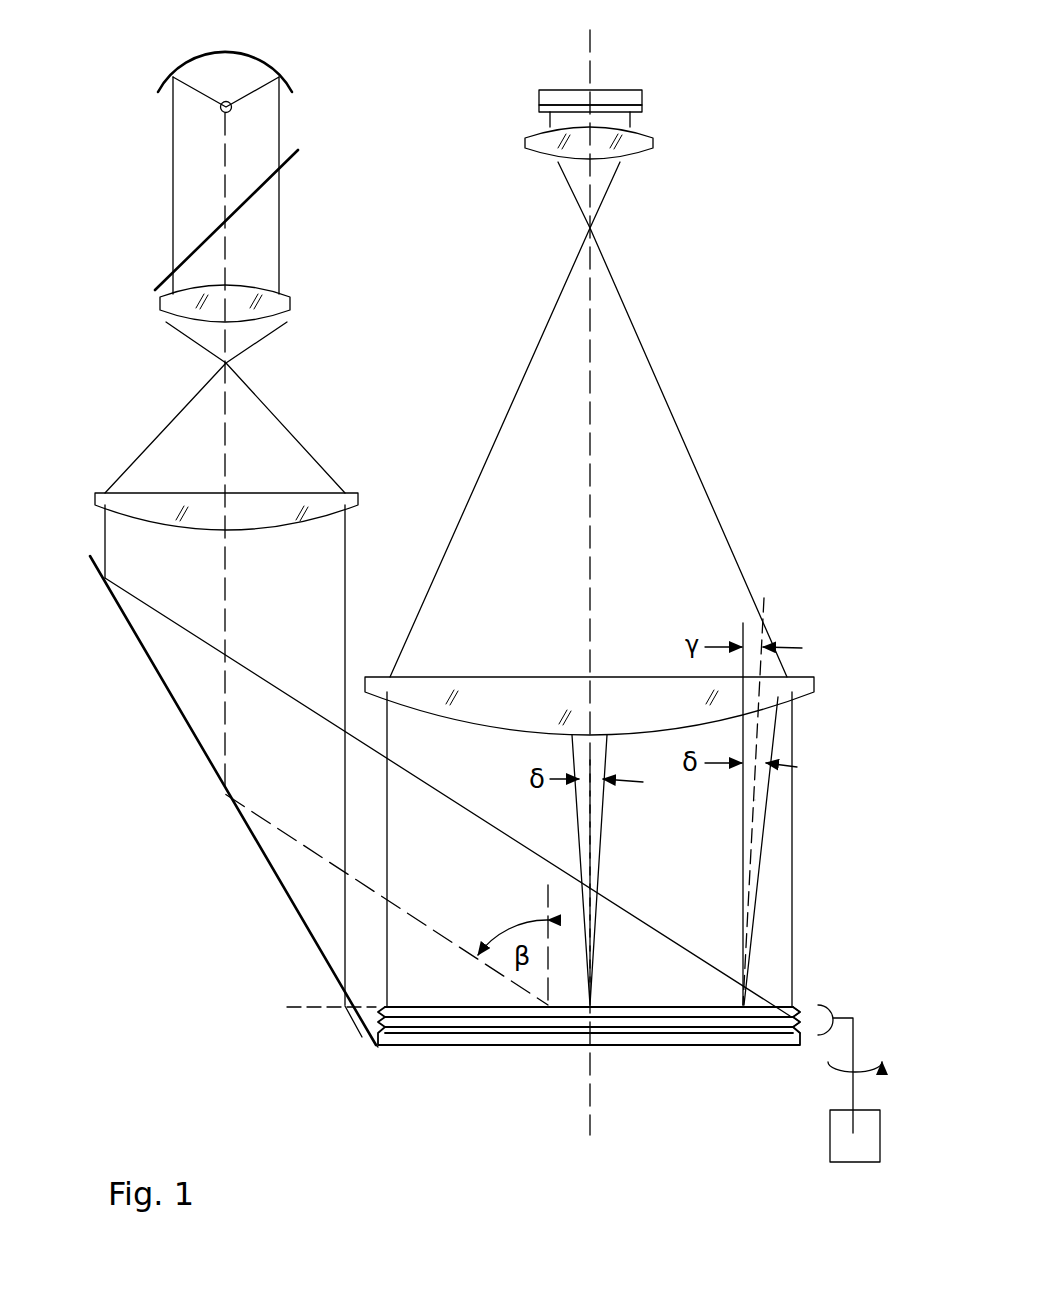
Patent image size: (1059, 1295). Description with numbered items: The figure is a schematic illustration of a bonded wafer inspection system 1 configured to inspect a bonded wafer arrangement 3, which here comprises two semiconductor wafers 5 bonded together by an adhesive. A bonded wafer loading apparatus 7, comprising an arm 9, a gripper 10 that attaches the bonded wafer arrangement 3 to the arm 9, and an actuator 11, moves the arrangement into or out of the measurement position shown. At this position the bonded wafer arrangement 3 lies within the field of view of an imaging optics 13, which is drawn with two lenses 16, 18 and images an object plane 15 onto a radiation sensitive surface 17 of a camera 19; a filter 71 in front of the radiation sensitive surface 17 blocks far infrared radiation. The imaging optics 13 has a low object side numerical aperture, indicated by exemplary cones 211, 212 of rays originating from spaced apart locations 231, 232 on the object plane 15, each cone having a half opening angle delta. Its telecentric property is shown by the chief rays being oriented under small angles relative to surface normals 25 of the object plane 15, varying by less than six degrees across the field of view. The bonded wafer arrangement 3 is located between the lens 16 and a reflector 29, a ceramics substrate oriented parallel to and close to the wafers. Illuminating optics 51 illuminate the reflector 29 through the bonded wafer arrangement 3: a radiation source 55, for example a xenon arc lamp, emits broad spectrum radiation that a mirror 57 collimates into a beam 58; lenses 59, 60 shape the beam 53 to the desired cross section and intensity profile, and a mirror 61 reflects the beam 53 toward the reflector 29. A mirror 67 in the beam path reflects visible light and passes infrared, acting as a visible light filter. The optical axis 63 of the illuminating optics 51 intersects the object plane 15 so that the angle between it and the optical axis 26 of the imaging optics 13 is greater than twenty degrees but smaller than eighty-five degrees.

The bonded wafer inspection system 1 is at (775, 127).
The bonded wafer arrangement 3 is at (617, 1003).
The semiconductor wafer 5 is at (793, 1010).
The bonded wafer loading apparatus 7 is at (880, 993).
The arm 9 is at (852, 1018).
The gripper 10 is at (830, 1035).
The actuator 11 is at (830, 1140).
The imaging optics 13 is at (742, 397).
The object plane 15 is at (300, 1009).
The lens 16 is at (815, 683).
The radiation sensitive surface 17 is at (547, 108).
The lens 18 is at (653, 143).
The camera 19 is at (552, 90).
The cone of rays 211 is at (607, 753).
The cone of rays 212 is at (773, 737).
The location on the object plane / chief ray 231 is at (592, 824).
The location on the object plane / chief ray 232 is at (753, 802).
The surface normal 25 is at (592, 628).
The optical axis 26 is at (591, 474).
The reflector 29 is at (378, 1047).
The illuminating optics 51 is at (366, 330).
The beam 53 is at (346, 540).
The radiation source 55 is at (232, 107).
The mirror 57 is at (156, 86).
The beam 58 is at (172, 170).
The lens 59 is at (160, 304).
The lens 60 is at (95, 500).
The mirror 61 is at (90, 556).
The optical axis 63 is at (228, 596).
The mirror 67 is at (302, 153).
The filter 71 is at (642, 108).